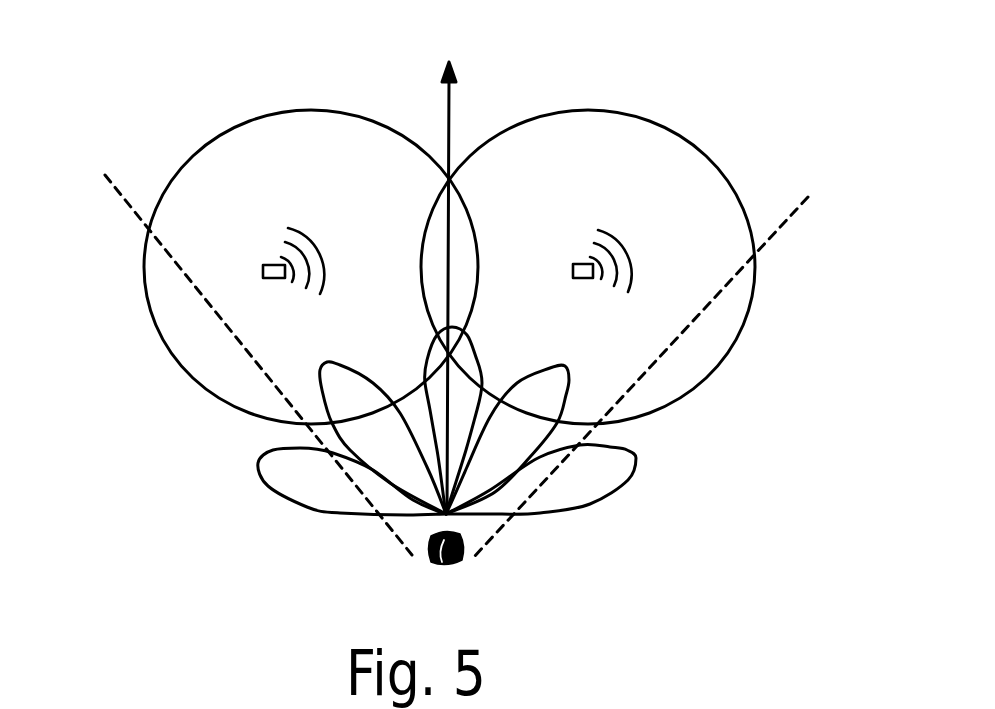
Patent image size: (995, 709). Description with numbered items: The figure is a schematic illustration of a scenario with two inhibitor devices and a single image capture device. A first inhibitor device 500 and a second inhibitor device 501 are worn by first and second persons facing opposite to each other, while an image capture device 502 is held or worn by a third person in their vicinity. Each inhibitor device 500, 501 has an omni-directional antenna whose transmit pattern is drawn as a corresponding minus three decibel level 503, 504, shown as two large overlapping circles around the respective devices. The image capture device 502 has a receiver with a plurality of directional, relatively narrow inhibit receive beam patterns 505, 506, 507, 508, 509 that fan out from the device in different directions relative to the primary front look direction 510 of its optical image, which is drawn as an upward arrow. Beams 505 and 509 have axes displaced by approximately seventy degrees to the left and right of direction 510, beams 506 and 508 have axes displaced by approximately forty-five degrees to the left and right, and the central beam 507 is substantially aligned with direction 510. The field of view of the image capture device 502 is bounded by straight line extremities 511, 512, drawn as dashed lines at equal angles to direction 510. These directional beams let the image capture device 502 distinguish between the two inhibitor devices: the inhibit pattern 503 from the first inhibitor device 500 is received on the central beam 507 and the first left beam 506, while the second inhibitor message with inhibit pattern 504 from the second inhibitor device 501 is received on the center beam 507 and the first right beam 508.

The first inhibitor device 500 is at (275, 280).
The second inhibitor device 501 is at (578, 281).
The image capture device 502 is at (443, 566).
The –3 dB level of first inhibitor device transmit pattern 503 is at (215, 140).
The –3 dB level of second inhibitor device transmit pattern 504 is at (637, 112).
The inhibit receive beam pattern 505 is at (352, 481).
The first left beam 506 is at (383, 438).
The central beam 507 is at (433, 408).
The first right beam 508 is at (507, 439).
The inhibit receive beam pattern 509 is at (541, 479).
The primary look direction 510 is at (451, 266).
The straight line extremity 511 is at (120, 197).
The straight line extremity 512 is at (780, 230).